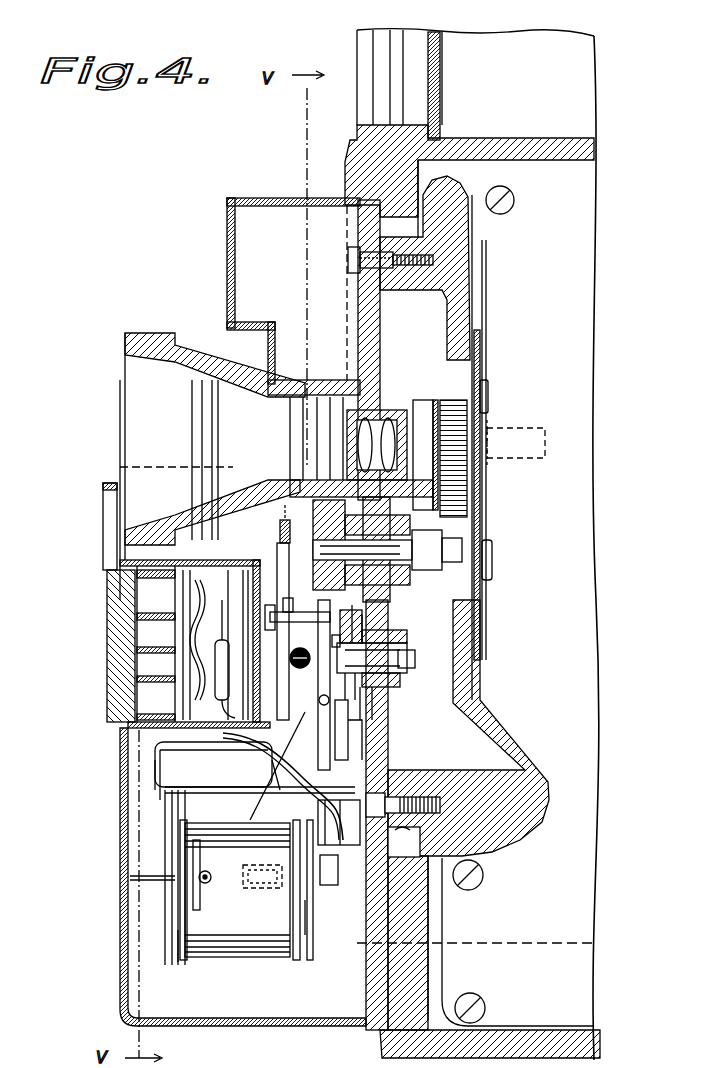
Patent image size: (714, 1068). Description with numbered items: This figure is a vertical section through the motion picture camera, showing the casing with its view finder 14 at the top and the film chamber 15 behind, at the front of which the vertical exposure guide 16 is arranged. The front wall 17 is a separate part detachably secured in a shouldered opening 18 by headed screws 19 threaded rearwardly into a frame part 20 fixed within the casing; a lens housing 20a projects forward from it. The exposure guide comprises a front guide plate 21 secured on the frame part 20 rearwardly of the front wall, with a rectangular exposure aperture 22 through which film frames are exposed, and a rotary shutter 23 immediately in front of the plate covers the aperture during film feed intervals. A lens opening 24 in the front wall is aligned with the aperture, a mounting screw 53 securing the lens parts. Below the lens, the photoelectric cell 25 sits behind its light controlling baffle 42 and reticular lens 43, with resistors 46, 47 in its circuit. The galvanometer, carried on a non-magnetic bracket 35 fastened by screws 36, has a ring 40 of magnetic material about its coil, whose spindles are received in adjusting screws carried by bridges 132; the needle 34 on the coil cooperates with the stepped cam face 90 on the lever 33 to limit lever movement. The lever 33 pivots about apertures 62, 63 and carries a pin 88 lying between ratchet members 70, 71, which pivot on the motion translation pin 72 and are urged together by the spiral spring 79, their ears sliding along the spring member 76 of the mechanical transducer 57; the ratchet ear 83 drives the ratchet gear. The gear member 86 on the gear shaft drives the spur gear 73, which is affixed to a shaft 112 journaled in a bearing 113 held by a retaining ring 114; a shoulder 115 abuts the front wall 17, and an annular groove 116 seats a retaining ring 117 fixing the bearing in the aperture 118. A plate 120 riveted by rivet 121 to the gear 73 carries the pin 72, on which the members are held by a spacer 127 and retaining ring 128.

The view finder 14 is at (515, 82).
The film chamber 15 is at (560, 284).
The vertical exposure guide 16 is at (501, 565).
The front wall 17 is at (380, 766).
The shouldered opening 18 is at (404, 843).
The headed screws 19 is at (448, 775).
The frame part 20 is at (500, 745).
The lens housing 20a is at (345, 442).
The front guide plate 21 is at (480, 513).
The exposure aperture 22 is at (478, 435).
The rotary shutter 23 is at (460, 362).
The lens opening 24 is at (390, 470).
The photoelectric cell 25 is at (180, 612).
The lever 33 is at (228, 738).
The needle 34 is at (228, 880).
The bracket 35 is at (305, 892).
The screws 36 is at (358, 815).
The ring 40 is at (252, 861).
The light controlling baffle 42 is at (190, 641).
The reticular lens 43 is at (110, 650).
The resistor 46 is at (226, 690).
The resistor 47 is at (240, 580).
The screw 53 is at (460, 440).
The mechanical transducer 57 is at (294, 542).
The aperture 62 is at (166, 790).
The aperture 63 is at (272, 775).
The ratchet member 70 is at (320, 713).
The ratchet member 71 is at (277, 766).
The motion translation pin 72 is at (283, 786).
The spur gear 73 is at (350, 725).
The spring member 76 is at (280, 591).
The spiral spring 79 is at (295, 674).
The ratchet ear 83 is at (300, 487).
The gear member 86 is at (355, 585).
The pin 88 is at (305, 632).
The stepped cam face 90 is at (155, 842).
The shaft 112 is at (398, 682).
The bearing 113 is at (392, 697).
The retaining ring 114 is at (392, 645).
The shoulder 115 is at (375, 631).
The annular groove 116 is at (352, 642).
The retaining ring 117 is at (370, 616).
The aperture 118 is at (392, 706).
The plate 120 is at (376, 658).
The rivet 121 is at (328, 702).
The spacer 127 is at (345, 755).
The retaining ring 128 is at (345, 779).
The bridges 132 is at (180, 962).